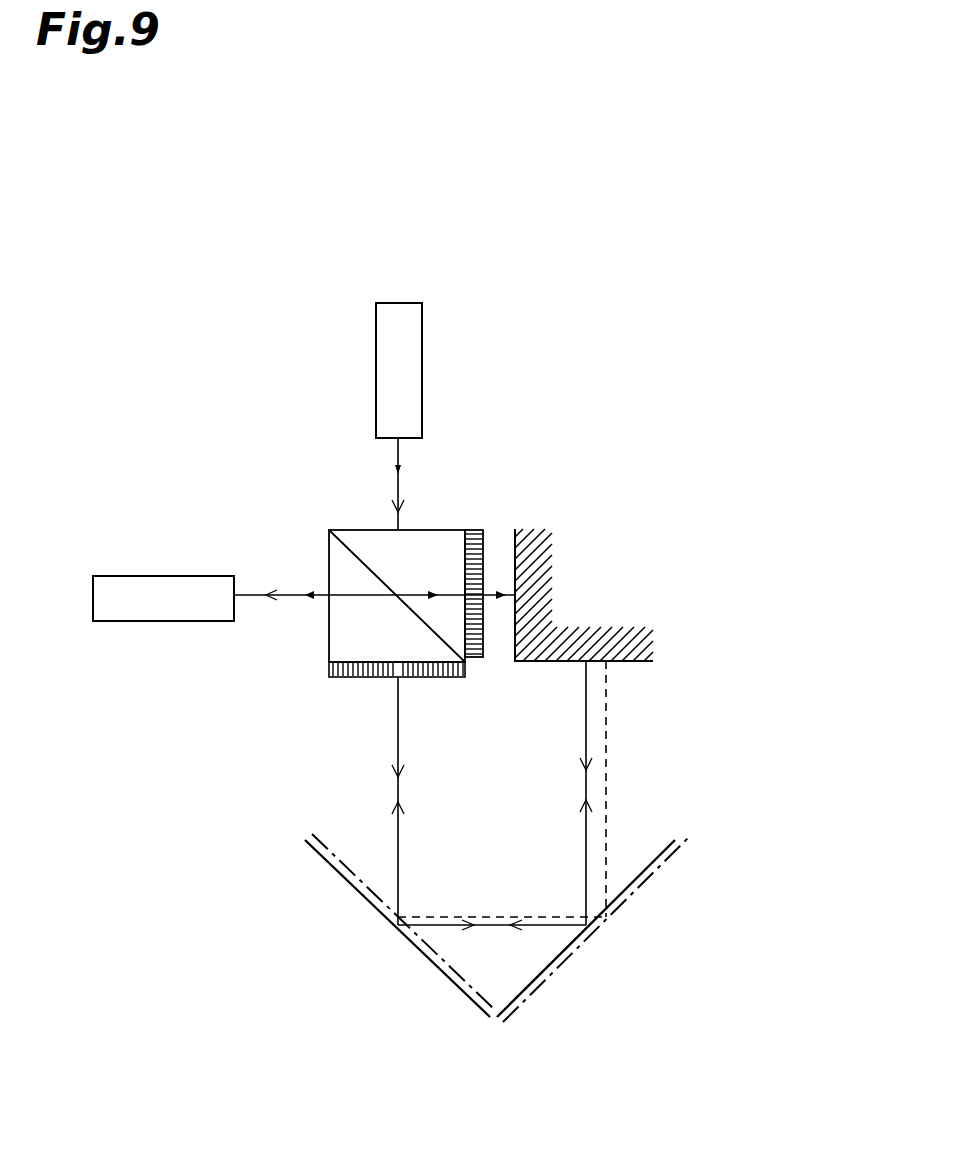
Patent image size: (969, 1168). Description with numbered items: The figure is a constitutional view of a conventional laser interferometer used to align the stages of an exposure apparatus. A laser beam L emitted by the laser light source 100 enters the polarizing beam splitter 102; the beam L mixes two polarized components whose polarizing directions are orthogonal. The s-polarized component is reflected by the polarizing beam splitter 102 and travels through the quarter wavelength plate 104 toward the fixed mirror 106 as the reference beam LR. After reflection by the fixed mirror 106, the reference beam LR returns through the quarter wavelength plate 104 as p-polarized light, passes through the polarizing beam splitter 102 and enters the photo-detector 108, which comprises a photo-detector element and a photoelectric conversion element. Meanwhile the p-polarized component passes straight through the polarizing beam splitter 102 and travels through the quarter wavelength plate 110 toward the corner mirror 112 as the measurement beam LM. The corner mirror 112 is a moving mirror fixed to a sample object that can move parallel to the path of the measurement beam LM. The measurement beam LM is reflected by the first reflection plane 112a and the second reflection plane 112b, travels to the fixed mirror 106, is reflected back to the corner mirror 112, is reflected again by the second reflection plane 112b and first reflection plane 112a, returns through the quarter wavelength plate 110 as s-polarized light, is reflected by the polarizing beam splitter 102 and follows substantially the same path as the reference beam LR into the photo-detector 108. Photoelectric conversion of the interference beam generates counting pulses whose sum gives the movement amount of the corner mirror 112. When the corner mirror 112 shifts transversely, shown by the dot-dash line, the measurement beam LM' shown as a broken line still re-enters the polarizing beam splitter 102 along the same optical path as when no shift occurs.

The laser light source 100 is at (399, 308).
The polarizing beam splitter 102 is at (440, 537).
The quarter wavelength plate 104 is at (487, 540).
The fixed mirror 106 is at (563, 594).
The photo-detector 108 is at (165, 605).
The quarter wavelength plate 110 is at (337, 678).
The corner mirror 112 is at (505, 897).
The first reflection plane 112a is at (313, 838).
The second reflection plane 112b is at (659, 838).
The laser beam L is at (395, 459).
The reference beam LR is at (484, 600).
The measurement beam LM is at (489, 803).
The measurement beam LM' is at (578, 793).